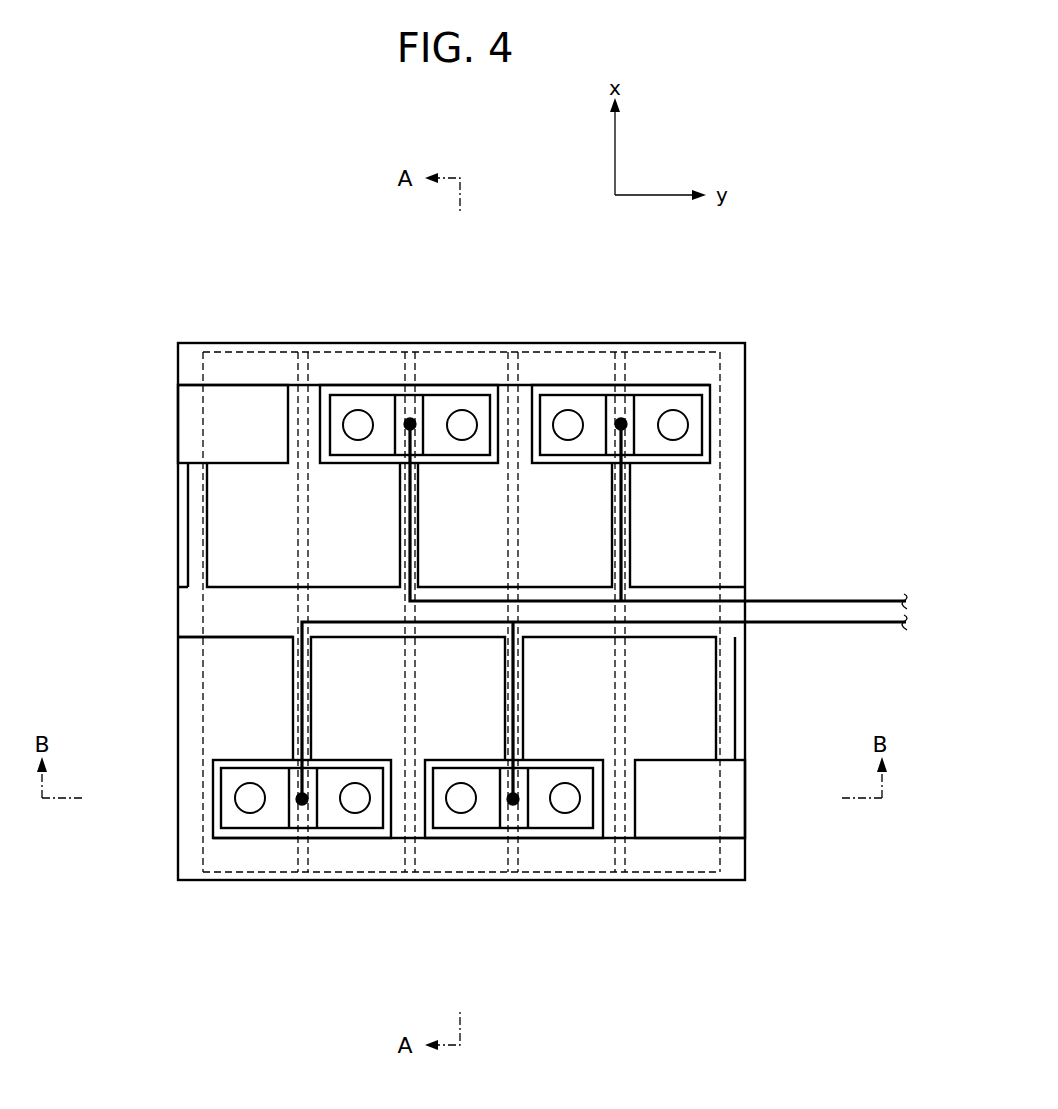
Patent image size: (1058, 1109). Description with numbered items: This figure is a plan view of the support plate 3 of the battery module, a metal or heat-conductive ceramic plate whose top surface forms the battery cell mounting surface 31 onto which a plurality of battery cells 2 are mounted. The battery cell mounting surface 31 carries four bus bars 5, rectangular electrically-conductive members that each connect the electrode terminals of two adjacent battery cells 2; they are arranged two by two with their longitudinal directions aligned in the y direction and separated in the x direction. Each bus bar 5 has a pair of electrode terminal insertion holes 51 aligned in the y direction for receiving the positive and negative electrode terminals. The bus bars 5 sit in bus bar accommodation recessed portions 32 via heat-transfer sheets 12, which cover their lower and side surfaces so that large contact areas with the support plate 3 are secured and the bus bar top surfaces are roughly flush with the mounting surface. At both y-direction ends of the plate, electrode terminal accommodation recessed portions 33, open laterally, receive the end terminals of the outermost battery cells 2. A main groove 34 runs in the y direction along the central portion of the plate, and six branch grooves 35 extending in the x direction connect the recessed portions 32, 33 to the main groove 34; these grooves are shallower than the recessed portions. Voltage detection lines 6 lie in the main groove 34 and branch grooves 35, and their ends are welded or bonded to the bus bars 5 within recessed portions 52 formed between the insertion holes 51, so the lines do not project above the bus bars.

The battery cell 2 is at (308, 352).
The support plate 3 is at (748, 490).
The bus bar 5 is at (481, 400).
The voltage detection line 6 is at (873, 622).
The heat-transfer sheet 12 is at (377, 390).
The battery cell mounting surface 31 is at (712, 525).
The bus bar accommodation recessed portion 32 is at (500, 405).
The electrode terminal accommodation recessed portion 33 is at (185, 432).
The main groove 34 is at (188, 618).
The branch groove 35 is at (185, 512).
The electrode terminal insertion hole 51 is at (356, 412).
The recessed portion 52 is at (410, 417).